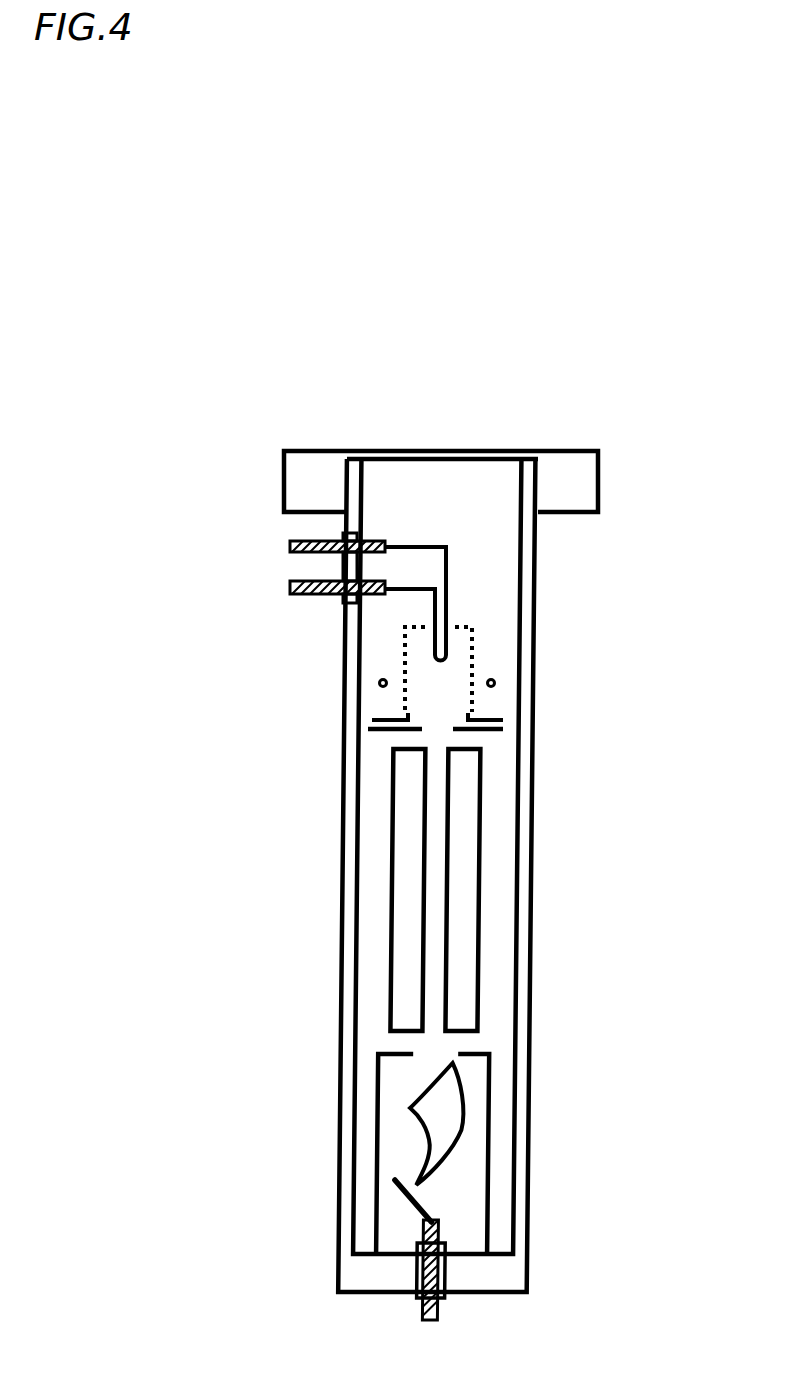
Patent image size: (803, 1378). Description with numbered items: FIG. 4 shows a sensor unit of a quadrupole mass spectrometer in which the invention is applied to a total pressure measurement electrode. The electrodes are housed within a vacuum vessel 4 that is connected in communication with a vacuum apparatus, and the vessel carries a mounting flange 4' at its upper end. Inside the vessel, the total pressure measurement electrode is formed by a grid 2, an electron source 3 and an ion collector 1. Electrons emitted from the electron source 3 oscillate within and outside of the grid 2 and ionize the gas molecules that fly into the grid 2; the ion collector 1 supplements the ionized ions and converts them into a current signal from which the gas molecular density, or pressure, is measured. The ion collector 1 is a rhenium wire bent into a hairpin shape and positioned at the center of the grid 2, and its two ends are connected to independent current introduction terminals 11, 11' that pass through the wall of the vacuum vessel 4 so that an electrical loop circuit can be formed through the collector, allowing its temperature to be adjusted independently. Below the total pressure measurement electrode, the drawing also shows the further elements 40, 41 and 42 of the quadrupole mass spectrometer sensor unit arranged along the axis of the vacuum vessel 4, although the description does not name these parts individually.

The ion collector 1 is at (451, 612).
The grid 2 is at (477, 648).
The electron source 3 is at (500, 677).
The vacuum vessel 4 is at (363, 875).
The mounting flange 4' is at (489, 469).
The current introduction terminal 11 is at (286, 521).
The current introduction terminal 11' is at (268, 624).
The grid electrode 40 is at (505, 737).
The deflection plates 41 is at (480, 898).
The collector electrode 42 is at (485, 1167).